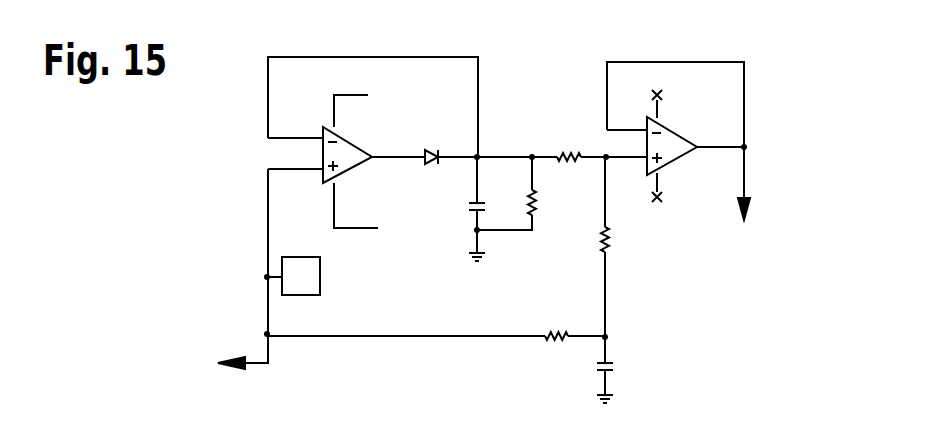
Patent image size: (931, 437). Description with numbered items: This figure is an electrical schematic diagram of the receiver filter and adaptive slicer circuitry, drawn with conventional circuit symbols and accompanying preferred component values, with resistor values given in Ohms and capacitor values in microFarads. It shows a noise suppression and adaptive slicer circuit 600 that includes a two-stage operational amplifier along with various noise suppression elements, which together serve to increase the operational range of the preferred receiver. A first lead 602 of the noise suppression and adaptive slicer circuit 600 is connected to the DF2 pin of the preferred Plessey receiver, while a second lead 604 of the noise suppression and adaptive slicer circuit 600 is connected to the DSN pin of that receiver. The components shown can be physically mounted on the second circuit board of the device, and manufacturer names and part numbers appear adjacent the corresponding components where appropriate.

The noise suppression and adaptive slicer circuit 600 is at (450, 357).
The first lead 602 is at (253, 358).
The second lead 604 is at (744, 183).